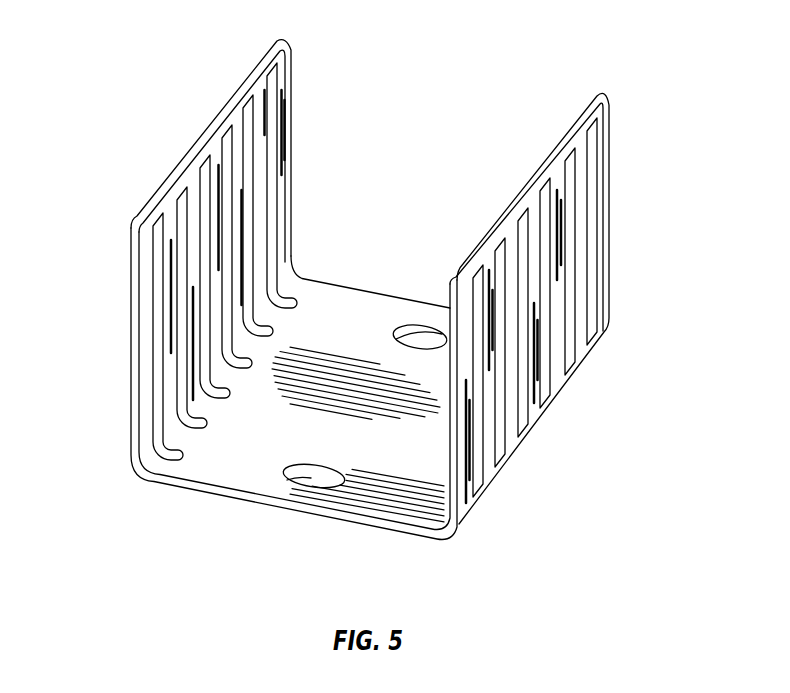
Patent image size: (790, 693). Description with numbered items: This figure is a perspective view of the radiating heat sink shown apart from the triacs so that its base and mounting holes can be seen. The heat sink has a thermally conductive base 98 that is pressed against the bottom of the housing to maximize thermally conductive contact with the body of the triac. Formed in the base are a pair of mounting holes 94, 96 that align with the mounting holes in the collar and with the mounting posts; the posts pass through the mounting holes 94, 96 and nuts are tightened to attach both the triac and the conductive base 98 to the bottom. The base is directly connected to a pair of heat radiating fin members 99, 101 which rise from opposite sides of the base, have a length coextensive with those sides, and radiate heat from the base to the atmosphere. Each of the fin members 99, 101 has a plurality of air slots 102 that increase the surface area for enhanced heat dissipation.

The mounting hole 94 is at (432, 335).
The mounting hole 96 is at (285, 482).
The conductive base 98 is at (312, 297).
The heat radiating fin member 99 is at (250, 80).
The heat radiating fin member 101 is at (598, 110).
The air slots 102 is at (157, 312).